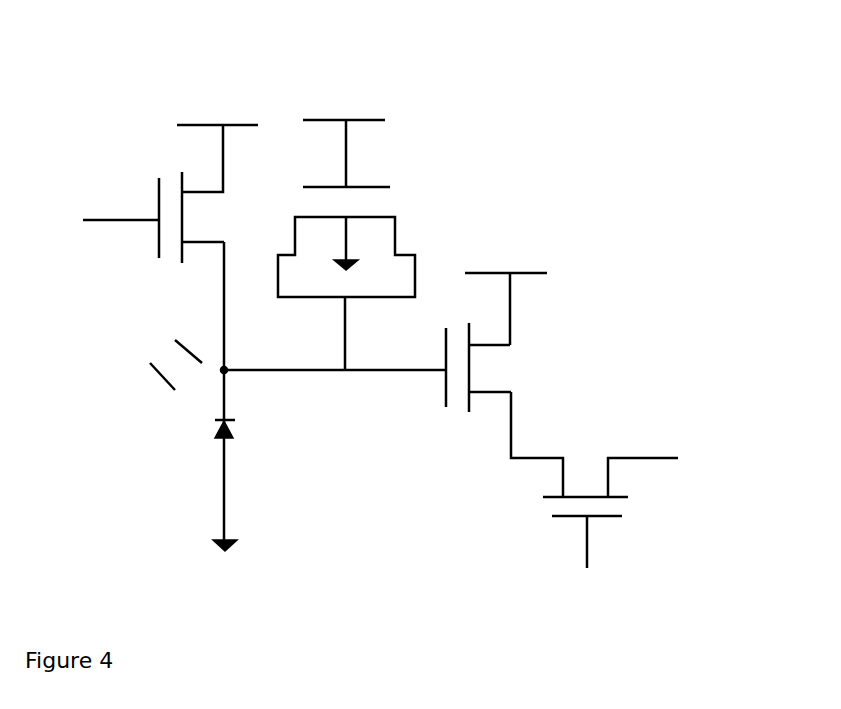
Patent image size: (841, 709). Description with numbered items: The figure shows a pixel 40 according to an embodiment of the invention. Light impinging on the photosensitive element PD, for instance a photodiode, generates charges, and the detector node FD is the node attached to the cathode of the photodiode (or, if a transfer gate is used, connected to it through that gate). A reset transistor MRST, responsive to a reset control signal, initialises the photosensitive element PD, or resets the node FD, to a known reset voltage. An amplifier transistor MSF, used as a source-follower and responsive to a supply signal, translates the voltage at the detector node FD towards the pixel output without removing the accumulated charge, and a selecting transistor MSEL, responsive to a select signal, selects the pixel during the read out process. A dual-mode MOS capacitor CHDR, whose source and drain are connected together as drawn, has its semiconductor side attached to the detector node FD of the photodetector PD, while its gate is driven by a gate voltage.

The pixel 40 is at (388, 307).
The reset transistor MRST is at (149, 181).
The MOS capacitor CHDR is at (355, 191).
The detector node FD is at (230, 365).
The photosensitive element PD is at (218, 443).
The amplifier transistor MSF is at (496, 327).
The selecting transistor MSEL is at (609, 551).